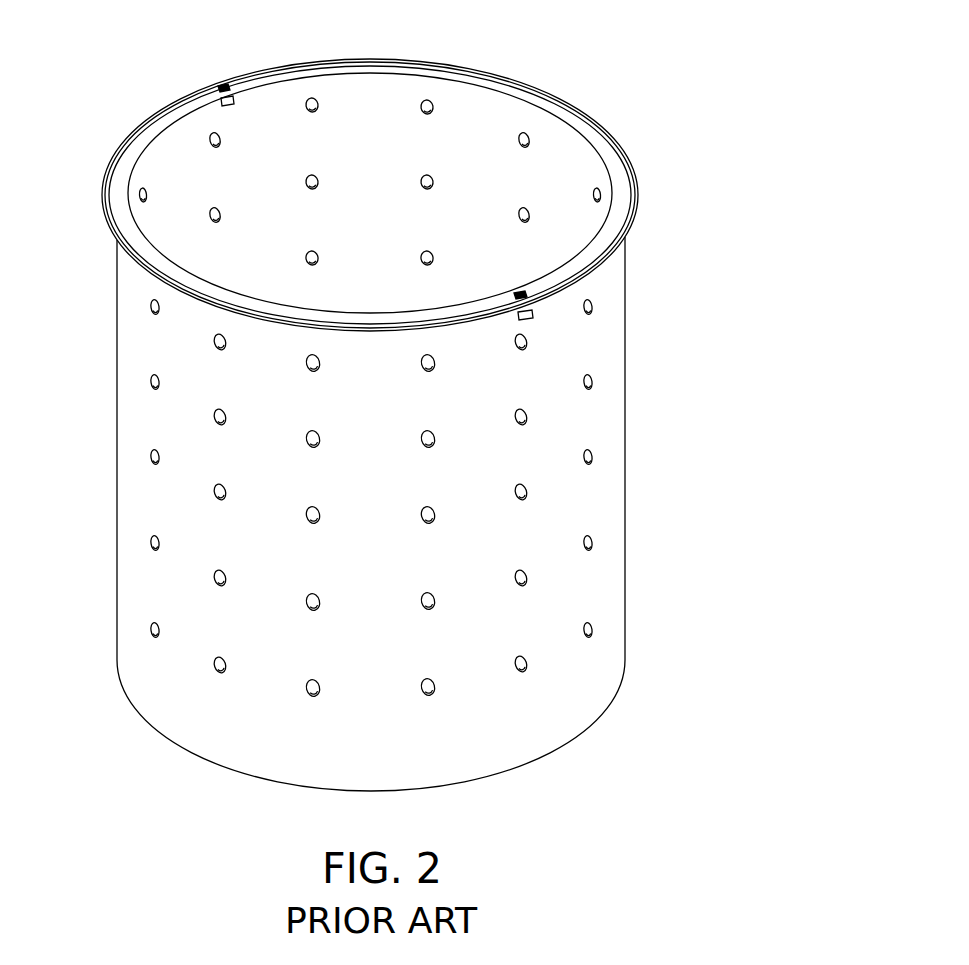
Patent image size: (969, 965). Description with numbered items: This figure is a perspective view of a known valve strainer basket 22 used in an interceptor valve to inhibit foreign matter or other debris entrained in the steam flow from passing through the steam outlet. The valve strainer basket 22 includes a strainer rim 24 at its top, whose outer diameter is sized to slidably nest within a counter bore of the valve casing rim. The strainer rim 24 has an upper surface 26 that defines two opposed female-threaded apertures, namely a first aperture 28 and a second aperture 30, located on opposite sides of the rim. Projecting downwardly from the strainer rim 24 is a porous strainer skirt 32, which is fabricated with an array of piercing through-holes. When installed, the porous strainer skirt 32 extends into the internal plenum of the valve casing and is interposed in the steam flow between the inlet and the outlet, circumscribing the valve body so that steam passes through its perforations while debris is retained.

The valve strainer basket 22 is at (414, 396).
The strainer rim 24 is at (379, 166).
The upper surface 26 is at (502, 78).
The first female-threaded aperture 28 is at (222, 90).
The second female-threaded aperture 30 is at (577, 280).
The porous strainer skirt 32 is at (145, 498).